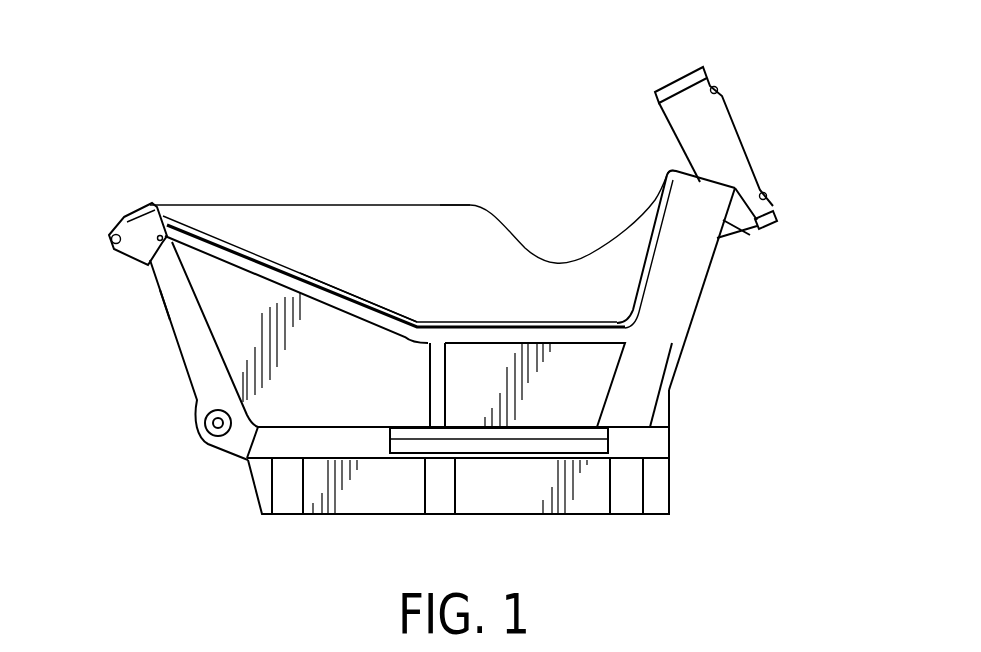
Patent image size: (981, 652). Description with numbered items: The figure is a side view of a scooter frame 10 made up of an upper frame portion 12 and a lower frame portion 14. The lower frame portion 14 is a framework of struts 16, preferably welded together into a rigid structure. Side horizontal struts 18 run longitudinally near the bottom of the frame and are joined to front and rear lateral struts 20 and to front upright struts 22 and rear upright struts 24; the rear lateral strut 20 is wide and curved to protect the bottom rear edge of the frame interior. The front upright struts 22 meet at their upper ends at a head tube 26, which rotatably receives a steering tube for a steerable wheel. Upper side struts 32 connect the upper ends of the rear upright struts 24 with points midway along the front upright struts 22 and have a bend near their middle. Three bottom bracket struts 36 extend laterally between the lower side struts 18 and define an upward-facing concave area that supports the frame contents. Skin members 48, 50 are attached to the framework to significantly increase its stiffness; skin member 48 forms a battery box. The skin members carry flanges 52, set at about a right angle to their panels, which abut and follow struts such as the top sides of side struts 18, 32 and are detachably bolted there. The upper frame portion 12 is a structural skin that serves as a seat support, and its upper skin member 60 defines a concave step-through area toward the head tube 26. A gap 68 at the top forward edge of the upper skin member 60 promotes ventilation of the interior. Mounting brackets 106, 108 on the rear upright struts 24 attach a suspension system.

The frame 10 is at (175, 175).
The upper frame portion 12 is at (278, 220).
The lower frame portion 14 is at (235, 334).
The struts 16 is at (572, 333).
The side horizontal struts 18 is at (340, 449).
The front and rear lateral struts 20 is at (672, 440).
The front upright struts 22 is at (672, 342).
The rear upright struts 24 is at (175, 296).
The head tube 26 is at (713, 130).
The upper side struts 32 is at (368, 310).
The bottom bracket struts 36 is at (442, 503).
The skin member 48 is at (533, 503).
The skin member 50 is at (278, 384).
The flanges 52 is at (236, 240).
The upper skin member 60 is at (450, 218).
The gap 68 is at (672, 142).
The mounting bracket 106 is at (213, 434).
The mounting bracket 108 is at (108, 236).